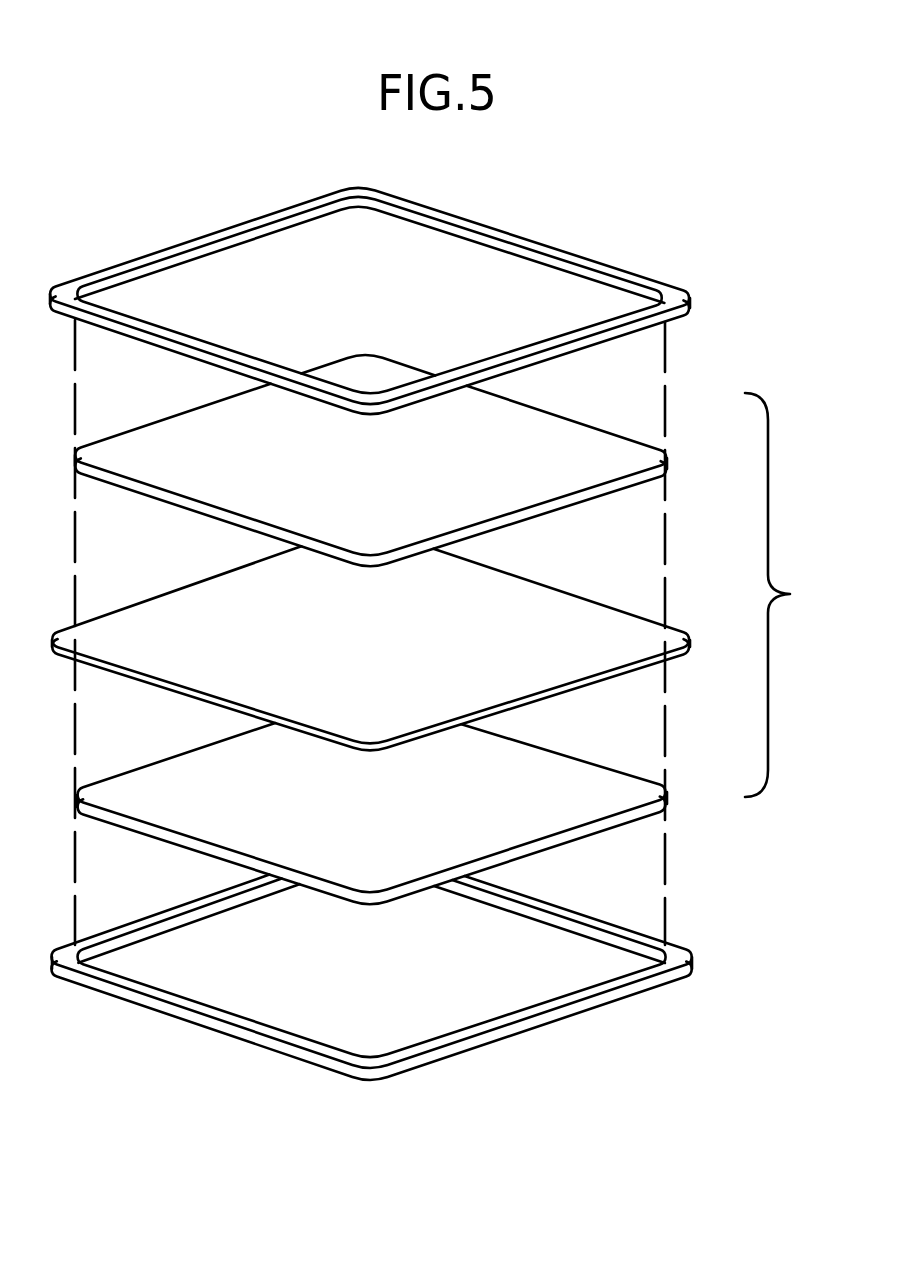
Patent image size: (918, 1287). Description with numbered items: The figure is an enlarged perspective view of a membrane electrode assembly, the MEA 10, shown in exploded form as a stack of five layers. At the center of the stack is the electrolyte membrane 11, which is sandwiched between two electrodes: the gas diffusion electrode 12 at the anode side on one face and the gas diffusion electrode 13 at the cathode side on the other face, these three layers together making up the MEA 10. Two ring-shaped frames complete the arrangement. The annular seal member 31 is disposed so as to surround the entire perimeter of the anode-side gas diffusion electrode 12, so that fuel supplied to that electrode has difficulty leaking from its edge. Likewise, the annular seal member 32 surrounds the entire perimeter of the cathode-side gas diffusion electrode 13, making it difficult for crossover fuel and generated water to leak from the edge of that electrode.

The MEA 10 is at (441, 629).
The electrolyte membrane 11 is at (653, 645).
The gas diffusion electrode at the anode side 12 is at (645, 793).
The gas diffusion electrode at the cathode side 13 is at (650, 454).
The annular seal member 31 is at (650, 940).
The annular seal member 32 is at (657, 282).